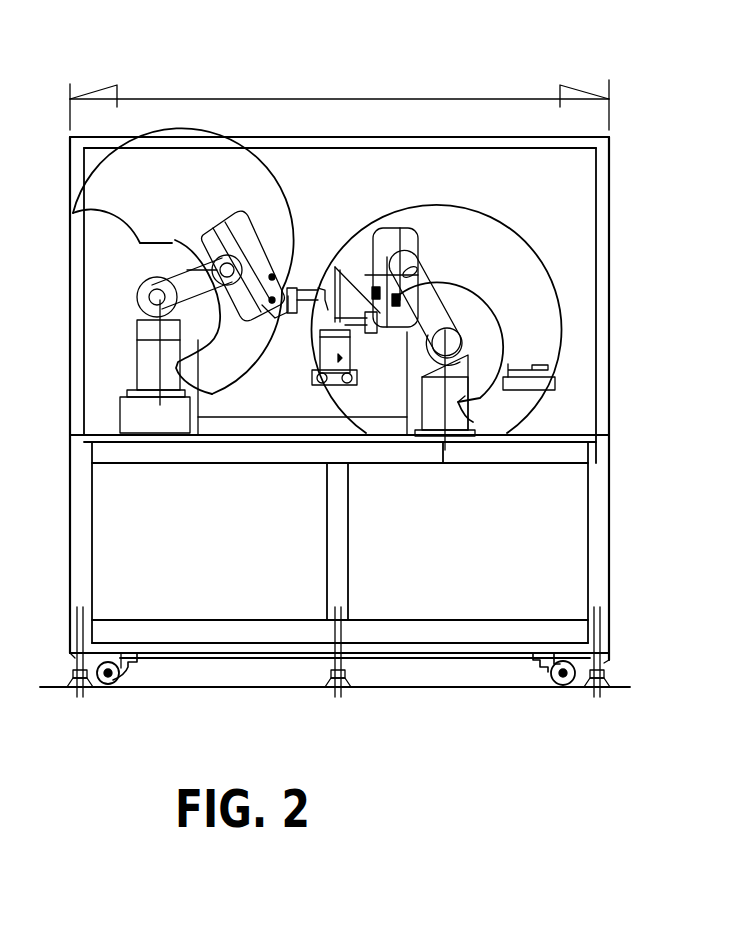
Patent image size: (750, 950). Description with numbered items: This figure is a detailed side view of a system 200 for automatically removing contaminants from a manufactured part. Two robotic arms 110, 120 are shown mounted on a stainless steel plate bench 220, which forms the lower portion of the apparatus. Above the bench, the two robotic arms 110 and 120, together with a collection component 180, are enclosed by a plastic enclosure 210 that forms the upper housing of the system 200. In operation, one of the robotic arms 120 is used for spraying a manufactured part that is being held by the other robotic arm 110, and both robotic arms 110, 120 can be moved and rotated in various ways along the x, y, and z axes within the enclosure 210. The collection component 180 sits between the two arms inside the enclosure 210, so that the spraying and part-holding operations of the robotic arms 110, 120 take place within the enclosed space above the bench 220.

The robotic arm 110 is at (180, 241).
The robotic arm 120 is at (374, 202).
The collection component 180 is at (313, 352).
The system 200 is at (652, 67).
The plastic enclosure 210 is at (609, 257).
The stainless steel plate bench 220 is at (609, 478).